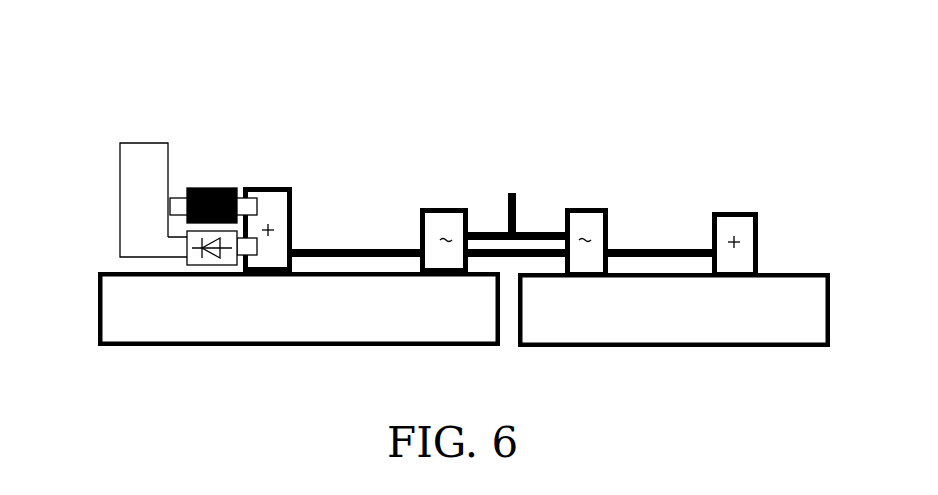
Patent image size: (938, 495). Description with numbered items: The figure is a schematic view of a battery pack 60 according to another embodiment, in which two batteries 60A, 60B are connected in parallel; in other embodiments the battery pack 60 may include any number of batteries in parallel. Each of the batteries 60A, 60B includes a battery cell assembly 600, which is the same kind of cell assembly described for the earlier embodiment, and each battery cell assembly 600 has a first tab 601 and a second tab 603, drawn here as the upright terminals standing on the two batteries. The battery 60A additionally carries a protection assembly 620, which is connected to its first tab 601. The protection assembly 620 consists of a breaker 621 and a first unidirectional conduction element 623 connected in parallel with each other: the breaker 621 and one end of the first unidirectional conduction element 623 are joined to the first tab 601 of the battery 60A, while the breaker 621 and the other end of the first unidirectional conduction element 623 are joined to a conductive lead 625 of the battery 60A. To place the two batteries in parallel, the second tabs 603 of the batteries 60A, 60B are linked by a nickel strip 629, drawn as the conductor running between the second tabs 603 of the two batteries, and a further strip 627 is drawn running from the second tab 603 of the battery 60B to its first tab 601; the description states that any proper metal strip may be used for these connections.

The battery pack 60 is at (458, 20).
The battery cell assembly 600 is at (350, 161).
The battery 60A is at (299, 309).
The battery 60B is at (674, 310).
The first tab 601 is at (277, 200).
The second tab 603 is at (440, 218).
The protection assembly 620 is at (212, 167).
The breaker 621 is at (200, 188).
The first unidirectional conduction element 623 is at (197, 250).
The conductive lead 625 is at (142, 210).
The connection wire 627 is at (642, 249).
The nickel strip 629 is at (513, 193).